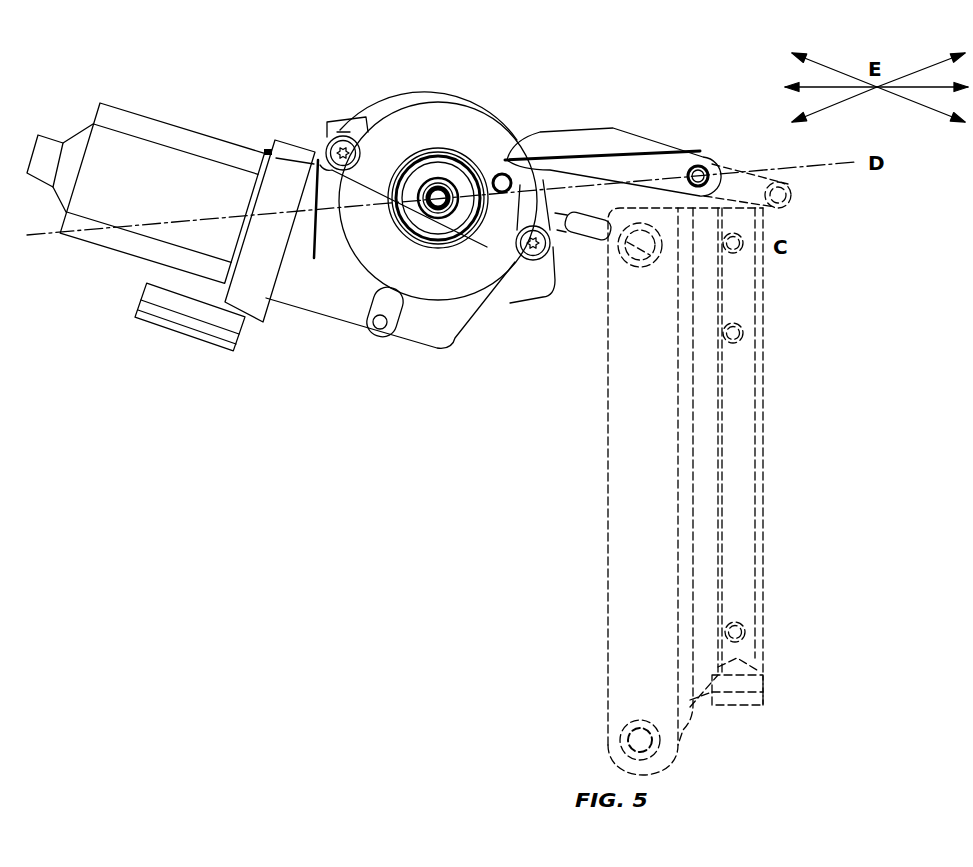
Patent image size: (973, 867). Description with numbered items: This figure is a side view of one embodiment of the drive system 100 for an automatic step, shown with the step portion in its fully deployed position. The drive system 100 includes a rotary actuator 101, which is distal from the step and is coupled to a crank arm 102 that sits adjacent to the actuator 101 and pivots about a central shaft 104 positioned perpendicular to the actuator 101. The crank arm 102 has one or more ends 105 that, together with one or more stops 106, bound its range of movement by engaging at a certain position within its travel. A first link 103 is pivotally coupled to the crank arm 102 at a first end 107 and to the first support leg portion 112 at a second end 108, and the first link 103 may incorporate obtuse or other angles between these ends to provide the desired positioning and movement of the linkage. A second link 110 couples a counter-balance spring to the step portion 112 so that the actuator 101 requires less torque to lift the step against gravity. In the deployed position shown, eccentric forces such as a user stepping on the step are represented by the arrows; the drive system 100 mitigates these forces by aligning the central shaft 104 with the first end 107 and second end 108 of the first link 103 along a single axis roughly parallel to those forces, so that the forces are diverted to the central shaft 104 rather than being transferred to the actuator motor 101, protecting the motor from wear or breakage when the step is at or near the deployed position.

The drive system 100 is at (96, 341).
The rotary actuator 101 is at (178, 140).
The crank arm 102 is at (383, 177).
The first link 103 is at (581, 138).
The central shaft 104 is at (447, 205).
The end of crank arm 105 is at (314, 258).
The stop 106 is at (343, 136).
The first end of first link 107 is at (500, 172).
The second end of first link 108 is at (700, 172).
The second link 110 is at (597, 242).
The first support leg portion 112 is at (748, 463).